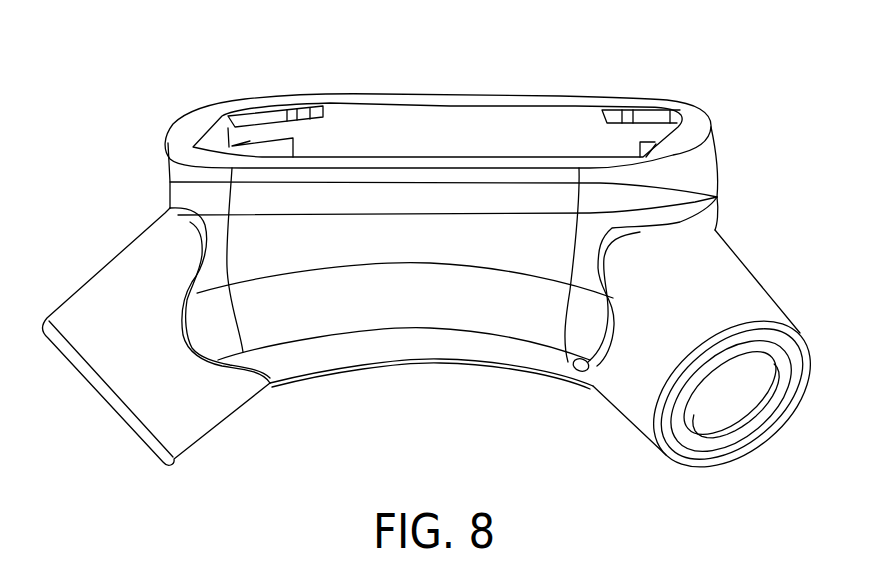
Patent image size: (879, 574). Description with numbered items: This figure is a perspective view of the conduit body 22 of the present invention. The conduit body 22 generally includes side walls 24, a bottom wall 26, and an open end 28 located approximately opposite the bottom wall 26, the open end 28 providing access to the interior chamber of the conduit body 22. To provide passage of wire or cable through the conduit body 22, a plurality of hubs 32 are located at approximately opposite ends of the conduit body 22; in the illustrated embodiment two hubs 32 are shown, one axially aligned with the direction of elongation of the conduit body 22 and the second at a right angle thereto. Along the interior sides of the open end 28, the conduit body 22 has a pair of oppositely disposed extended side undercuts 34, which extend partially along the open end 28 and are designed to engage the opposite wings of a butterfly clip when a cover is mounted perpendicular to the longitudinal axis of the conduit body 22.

The conduit body 22 is at (717, 160).
The side walls 24 is at (360, 247).
The bottom wall 26 is at (460, 362).
The open end 28 is at (412, 117).
The hubs 32 is at (93, 418).
The side undercuts 34 is at (268, 107).